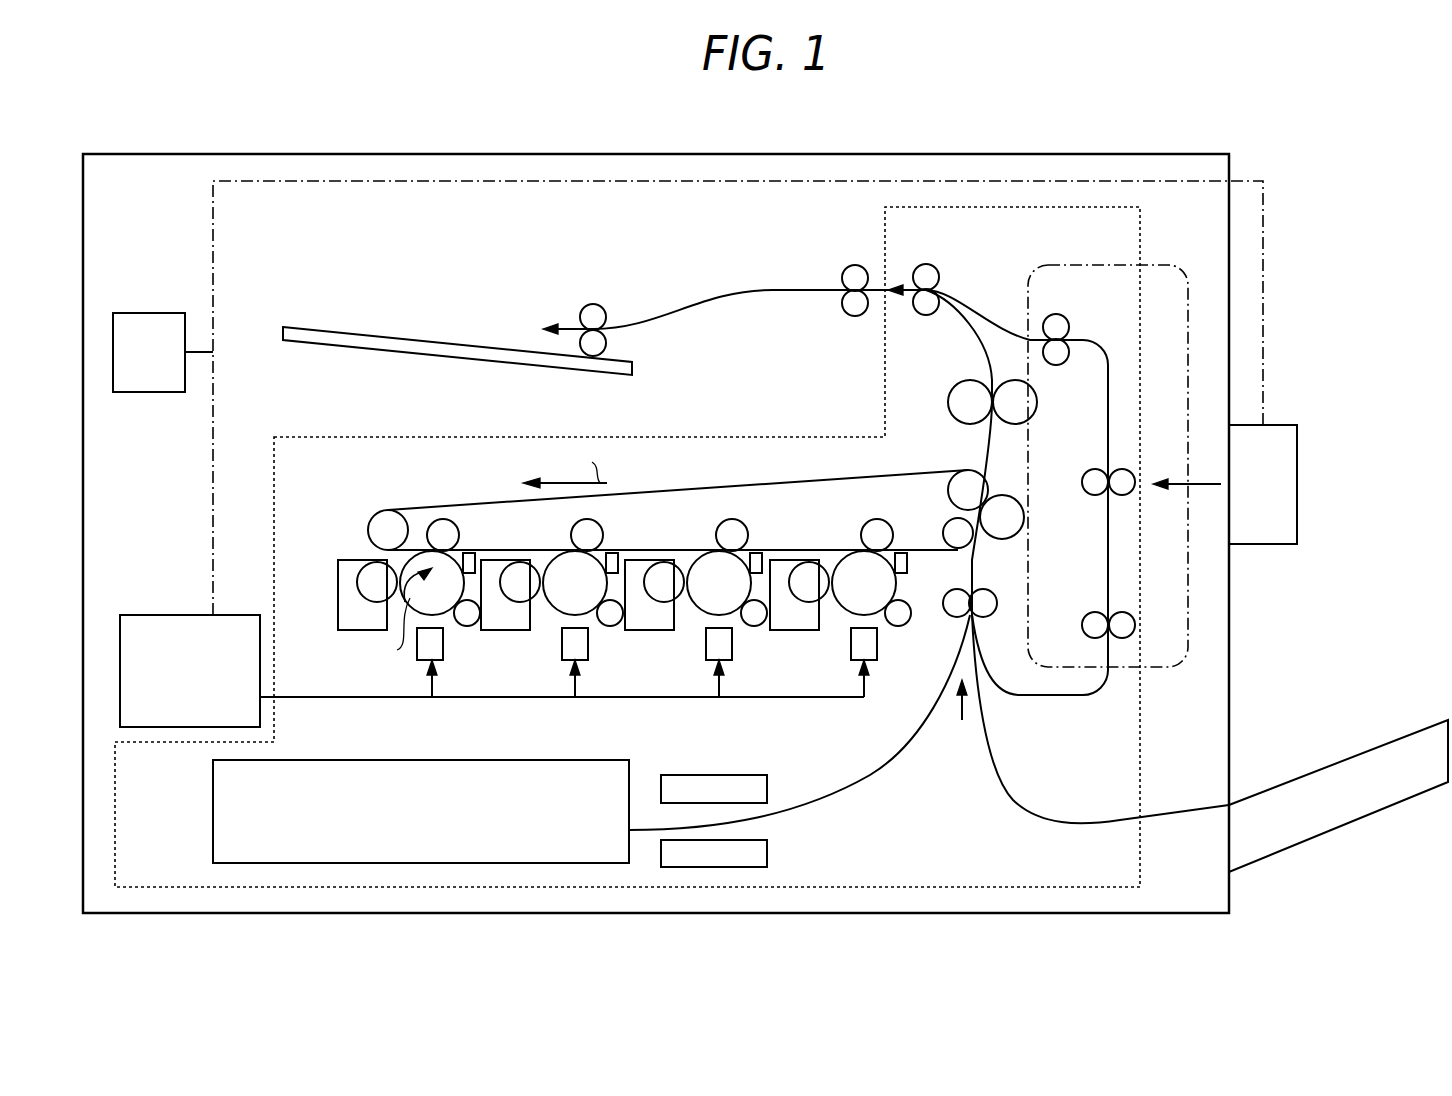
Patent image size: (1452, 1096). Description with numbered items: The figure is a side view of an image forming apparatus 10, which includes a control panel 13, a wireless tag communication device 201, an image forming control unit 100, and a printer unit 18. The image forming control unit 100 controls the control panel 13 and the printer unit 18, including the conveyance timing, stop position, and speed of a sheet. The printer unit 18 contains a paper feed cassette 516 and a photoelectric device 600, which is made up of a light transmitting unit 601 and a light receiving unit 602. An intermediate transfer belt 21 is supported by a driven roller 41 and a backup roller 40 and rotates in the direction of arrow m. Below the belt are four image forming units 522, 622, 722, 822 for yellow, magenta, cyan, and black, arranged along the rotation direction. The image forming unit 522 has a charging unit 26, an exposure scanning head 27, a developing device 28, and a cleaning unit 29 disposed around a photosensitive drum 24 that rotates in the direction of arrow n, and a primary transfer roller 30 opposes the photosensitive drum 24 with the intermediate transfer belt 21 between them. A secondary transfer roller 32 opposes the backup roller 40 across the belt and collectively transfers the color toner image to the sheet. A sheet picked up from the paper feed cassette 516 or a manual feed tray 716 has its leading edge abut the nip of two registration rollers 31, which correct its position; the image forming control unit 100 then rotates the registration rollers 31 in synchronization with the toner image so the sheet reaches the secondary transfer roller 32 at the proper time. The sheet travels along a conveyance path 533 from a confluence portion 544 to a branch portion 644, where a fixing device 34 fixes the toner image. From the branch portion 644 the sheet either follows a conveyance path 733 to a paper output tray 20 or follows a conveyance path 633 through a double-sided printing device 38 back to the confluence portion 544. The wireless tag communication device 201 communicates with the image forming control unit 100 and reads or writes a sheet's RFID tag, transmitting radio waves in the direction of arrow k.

The image forming apparatus 10 is at (275, 140).
The control panel 13 is at (170, 313).
The printer unit 18 is at (320, 437).
The paper output tray 20 is at (424, 327).
The intermediate transfer belt 21 is at (740, 485).
The photosensitive drum 24 is at (405, 565).
The charging unit 26 is at (470, 626).
The exposure scanning head 27 is at (417, 650).
The developing device 28 is at (338, 583).
The cleaning unit 29 is at (470, 553).
The primary transfer roller 30 is at (442, 518).
The registration rollers 31 is at (955, 620).
The secondary transfer roller 32 is at (1000, 540).
The fixing device 34 is at (976, 368).
The double-sided printing device 38 is at (1168, 265).
The backup roller 40 is at (950, 490).
The driven roller 41 is at (372, 512).
The image forming control unit 100 is at (150, 615).
The wireless tag communication device 201 is at (1297, 425).
The paper feed cassette 516 is at (572, 760).
The image forming unit 522 is at (455, 640).
The conveyance path 533 is at (990, 452).
The confluence portion 544 is at (973, 673).
The photoelectric device 600 is at (799, 743).
The light transmitting unit 601 is at (768, 790).
The light receiving unit 602 is at (743, 853).
The image forming unit 622 is at (605, 640).
The conveyance path 633 is at (1000, 322).
The branch portion 644 is at (967, 300).
The manual feed tray 716 is at (1418, 720).
The image forming unit 722 is at (748, 642).
The conveyance path 733 is at (860, 265).
The image forming unit 822 is at (840, 644).